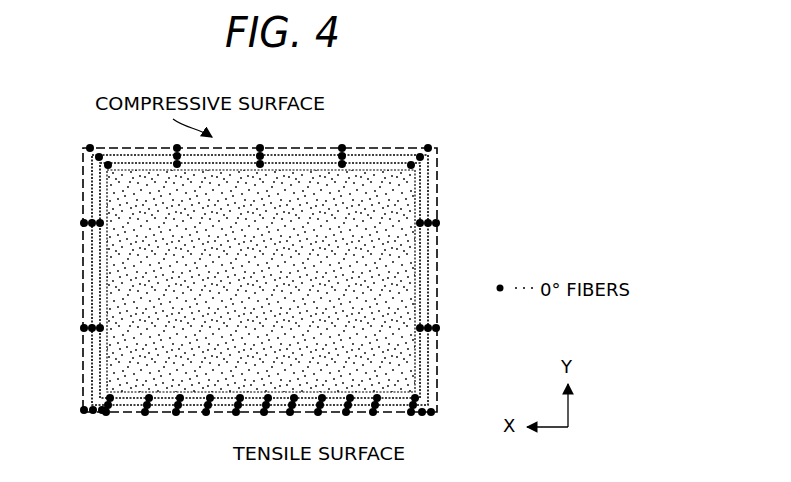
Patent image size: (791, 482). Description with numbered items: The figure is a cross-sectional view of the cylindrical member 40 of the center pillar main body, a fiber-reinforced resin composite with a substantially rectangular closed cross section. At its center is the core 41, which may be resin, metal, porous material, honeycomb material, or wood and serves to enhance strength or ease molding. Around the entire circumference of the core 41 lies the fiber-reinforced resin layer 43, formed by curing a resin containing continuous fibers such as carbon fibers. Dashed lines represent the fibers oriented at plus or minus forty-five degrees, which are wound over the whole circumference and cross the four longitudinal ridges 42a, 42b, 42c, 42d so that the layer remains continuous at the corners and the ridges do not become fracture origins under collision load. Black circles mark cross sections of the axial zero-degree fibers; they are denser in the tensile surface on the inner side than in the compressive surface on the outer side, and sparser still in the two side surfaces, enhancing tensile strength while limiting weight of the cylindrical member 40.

The cylindrical member 40 is at (382, 133).
The core 41 is at (128, 262).
The ridge 42a is at (87, 140).
The ridge 42b is at (432, 133).
The ridge 42c is at (87, 420).
The ridge 42d is at (433, 420).
The fiber-reinforced resin layer 43 is at (443, 212).